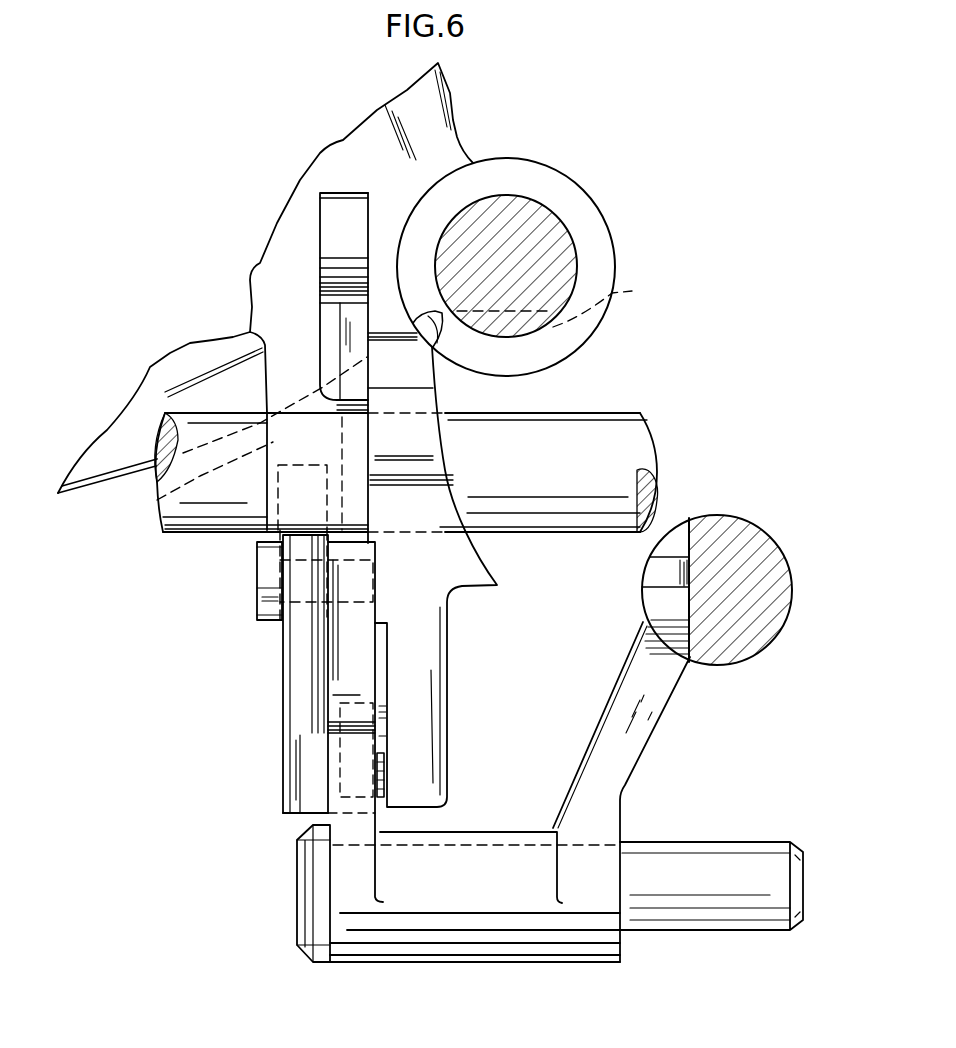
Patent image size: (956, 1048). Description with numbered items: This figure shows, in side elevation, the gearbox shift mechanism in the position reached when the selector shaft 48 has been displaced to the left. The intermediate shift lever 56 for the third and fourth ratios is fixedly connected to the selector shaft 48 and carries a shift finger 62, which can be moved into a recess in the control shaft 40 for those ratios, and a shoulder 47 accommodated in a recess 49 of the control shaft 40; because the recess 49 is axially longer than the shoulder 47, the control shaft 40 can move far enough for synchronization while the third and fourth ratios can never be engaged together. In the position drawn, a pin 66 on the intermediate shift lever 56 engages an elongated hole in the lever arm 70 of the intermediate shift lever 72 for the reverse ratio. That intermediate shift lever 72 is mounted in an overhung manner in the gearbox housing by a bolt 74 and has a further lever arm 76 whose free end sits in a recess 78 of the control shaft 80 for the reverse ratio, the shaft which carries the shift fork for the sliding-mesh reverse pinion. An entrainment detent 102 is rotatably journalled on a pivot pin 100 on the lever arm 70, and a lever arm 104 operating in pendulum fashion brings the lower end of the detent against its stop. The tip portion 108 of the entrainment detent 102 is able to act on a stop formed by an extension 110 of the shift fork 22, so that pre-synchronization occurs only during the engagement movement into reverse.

The shift fork 22 is at (443, 145).
The 3-4 control shaft 40 is at (563, 273).
The shoulder 47 is at (452, 357).
The selector shaft 48 is at (602, 428).
The recess 49 is at (557, 300).
The intermediate shift lever 56 is at (430, 572).
The shift finger 62 is at (333, 223).
The pin 66 is at (380, 760).
The lever arm 70 is at (360, 663).
The intermediate shift lever 72 is at (607, 928).
The bolt 74 is at (722, 865).
The further lever arm 76 is at (620, 745).
The recess 78 is at (677, 543).
The control shaft 80 is at (772, 568).
The pivot pin 100 is at (270, 578).
The entrainment detent 102 is at (302, 637).
The lever arm 104 is at (307, 765).
The tip portion 108 is at (303, 473).
The extension 110 is at (157, 500).